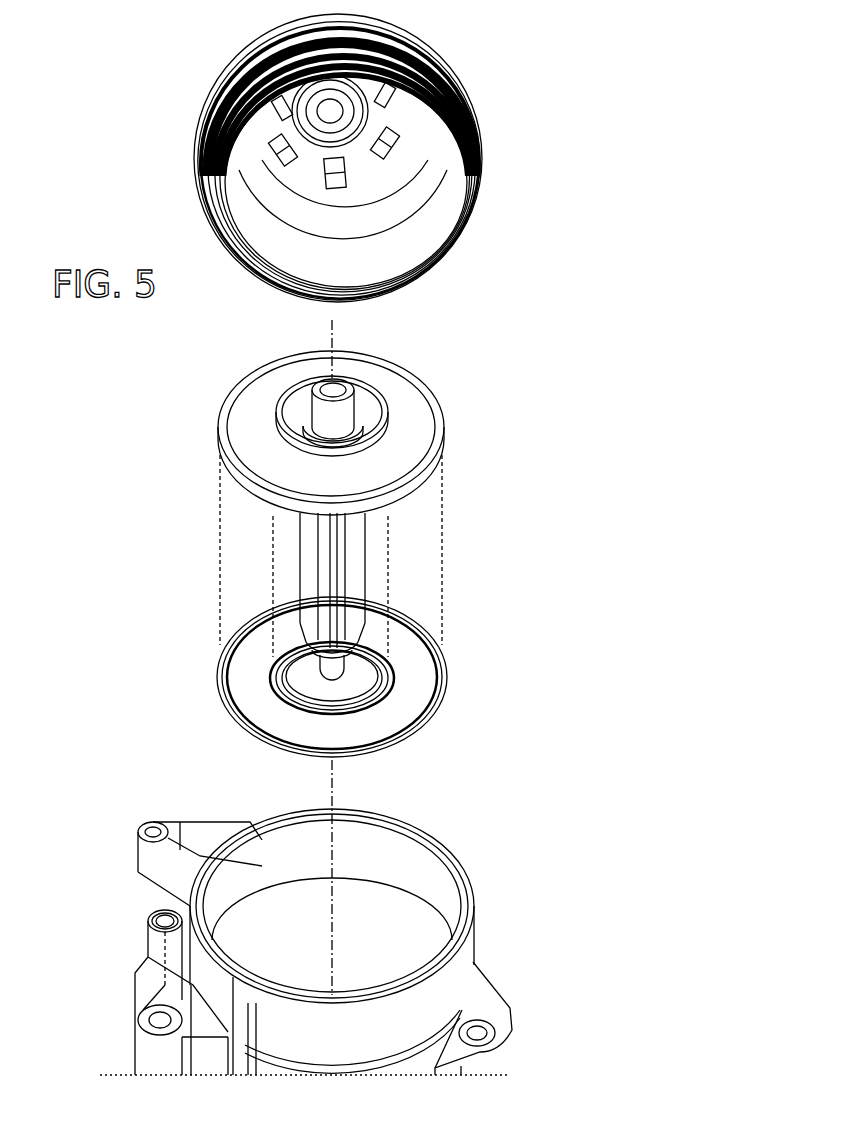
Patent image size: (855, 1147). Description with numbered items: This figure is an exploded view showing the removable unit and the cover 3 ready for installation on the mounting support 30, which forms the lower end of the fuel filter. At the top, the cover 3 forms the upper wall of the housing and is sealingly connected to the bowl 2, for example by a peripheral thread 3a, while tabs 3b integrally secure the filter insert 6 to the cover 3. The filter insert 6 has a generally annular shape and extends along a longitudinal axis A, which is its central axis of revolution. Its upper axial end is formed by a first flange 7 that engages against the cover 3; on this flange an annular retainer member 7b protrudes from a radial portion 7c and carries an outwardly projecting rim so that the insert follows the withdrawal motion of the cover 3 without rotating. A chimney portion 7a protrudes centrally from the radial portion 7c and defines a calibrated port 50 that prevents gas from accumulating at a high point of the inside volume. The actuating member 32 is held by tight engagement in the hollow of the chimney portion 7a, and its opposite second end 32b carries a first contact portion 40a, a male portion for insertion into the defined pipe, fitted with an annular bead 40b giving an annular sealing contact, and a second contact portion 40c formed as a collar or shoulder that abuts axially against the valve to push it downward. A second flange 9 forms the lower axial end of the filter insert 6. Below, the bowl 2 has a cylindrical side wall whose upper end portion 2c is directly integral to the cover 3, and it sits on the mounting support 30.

The cover 3 is at (203, 83).
The peripheral thread 3a is at (462, 100).
The tabs 3b is at (283, 152).
The longitudinal axis A is at (327, 338).
The first flange 7 is at (316, 410).
The chimney portion 7a is at (305, 403).
The annular retainer member 7b is at (277, 420).
The radial portion 7c is at (403, 403).
The calibrated port 50 is at (333, 393).
The actuating member 32 is at (325, 585).
The second end 32b is at (297, 632).
The first contact portion 40a is at (342, 663).
The annular bead 40b is at (337, 677).
The second contact portion 40c is at (320, 660).
The second flange 9 is at (335, 698).
The filter insert 6 is at (485, 642).
The bowl 2 is at (472, 962).
The upper end portion 2c is at (190, 907).
The mounting support 30 is at (286, 942).